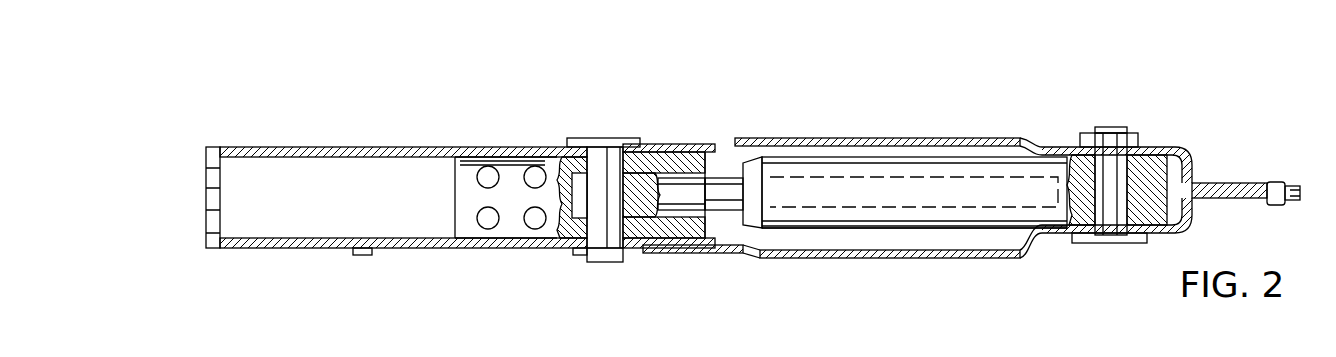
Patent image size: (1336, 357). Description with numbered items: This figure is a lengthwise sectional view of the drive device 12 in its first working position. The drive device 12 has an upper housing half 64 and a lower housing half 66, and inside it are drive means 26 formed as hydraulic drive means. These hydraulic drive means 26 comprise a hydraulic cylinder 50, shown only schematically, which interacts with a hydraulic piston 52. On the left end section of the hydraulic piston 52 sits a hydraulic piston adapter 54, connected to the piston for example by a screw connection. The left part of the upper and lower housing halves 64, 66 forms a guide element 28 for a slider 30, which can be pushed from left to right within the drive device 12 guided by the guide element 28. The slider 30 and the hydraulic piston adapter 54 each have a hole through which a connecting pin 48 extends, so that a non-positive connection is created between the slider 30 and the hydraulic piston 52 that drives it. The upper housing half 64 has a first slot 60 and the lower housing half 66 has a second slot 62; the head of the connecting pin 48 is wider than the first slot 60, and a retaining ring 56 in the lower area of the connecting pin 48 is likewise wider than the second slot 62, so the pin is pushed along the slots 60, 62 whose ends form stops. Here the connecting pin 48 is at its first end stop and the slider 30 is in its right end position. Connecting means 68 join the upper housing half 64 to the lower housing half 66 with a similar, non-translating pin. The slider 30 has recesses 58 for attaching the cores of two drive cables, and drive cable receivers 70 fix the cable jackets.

The drive device 12 is at (947, 136).
The drive means 26 is at (950, 226).
The guide element 28 is at (337, 147).
The slider 30 is at (512, 188).
The connecting pin 48 is at (597, 160).
The hydraulic cylinder 50 is at (890, 222).
The hydraulic piston 52 is at (730, 200).
The hydraulic piston adapter 54 is at (690, 200).
The retaining ring 56 is at (577, 255).
The recesses 58 is at (490, 166).
The first slot 60 is at (433, 147).
The second slot 62 is at (440, 250).
The upper housing half 64 is at (750, 138).
The lower housing half 66 is at (668, 253).
The connecting means 68 is at (1275, 182).
The drive cable receivers 70 is at (202, 222).